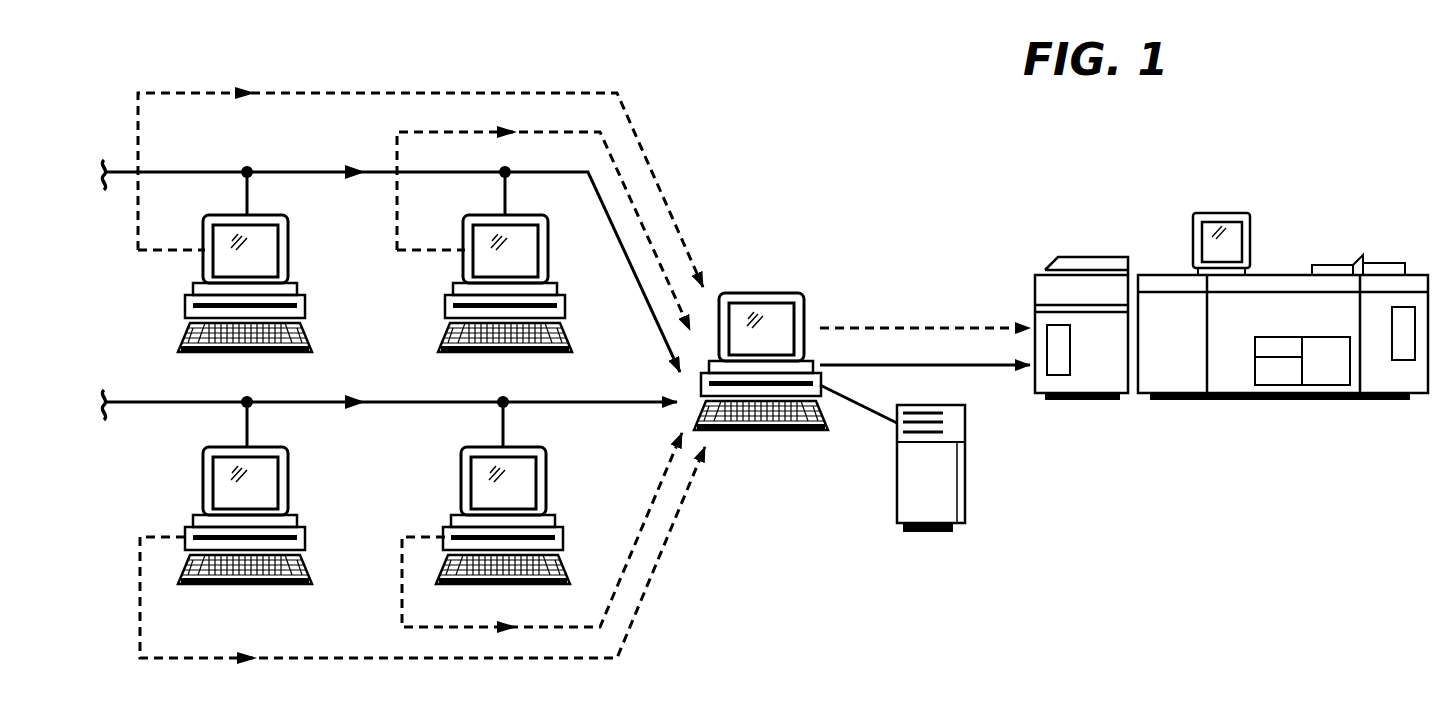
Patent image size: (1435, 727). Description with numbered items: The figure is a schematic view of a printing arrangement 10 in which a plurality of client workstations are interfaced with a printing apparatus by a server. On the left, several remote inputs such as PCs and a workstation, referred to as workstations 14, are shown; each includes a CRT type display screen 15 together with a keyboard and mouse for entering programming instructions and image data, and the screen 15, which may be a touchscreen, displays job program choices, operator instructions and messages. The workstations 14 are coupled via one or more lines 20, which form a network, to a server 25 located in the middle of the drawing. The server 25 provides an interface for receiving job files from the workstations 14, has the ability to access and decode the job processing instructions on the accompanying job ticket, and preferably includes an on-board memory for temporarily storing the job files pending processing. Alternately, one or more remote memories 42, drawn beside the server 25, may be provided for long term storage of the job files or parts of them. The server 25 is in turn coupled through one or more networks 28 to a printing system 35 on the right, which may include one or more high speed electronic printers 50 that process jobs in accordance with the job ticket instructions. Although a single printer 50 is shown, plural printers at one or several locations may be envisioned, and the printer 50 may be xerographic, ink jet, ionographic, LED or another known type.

The printing arrangement 10 is at (753, 157).
The workstations 14 is at (426, 287).
The display screen 15 is at (515, 253).
The lines 20 is at (660, 333).
The server 25 is at (763, 293).
The networks 28 is at (928, 365).
The printing system 35 is at (1318, 233).
The remote memories 42 is at (897, 485).
The printer 50 is at (1236, 380).